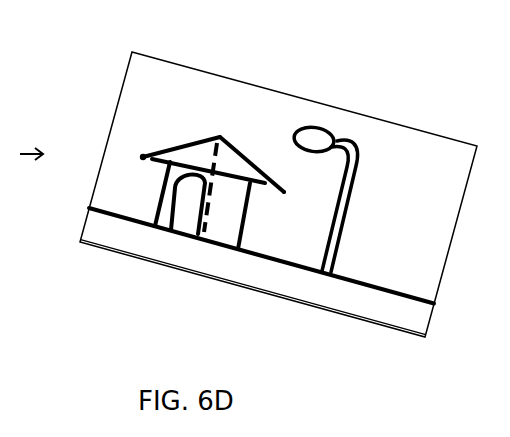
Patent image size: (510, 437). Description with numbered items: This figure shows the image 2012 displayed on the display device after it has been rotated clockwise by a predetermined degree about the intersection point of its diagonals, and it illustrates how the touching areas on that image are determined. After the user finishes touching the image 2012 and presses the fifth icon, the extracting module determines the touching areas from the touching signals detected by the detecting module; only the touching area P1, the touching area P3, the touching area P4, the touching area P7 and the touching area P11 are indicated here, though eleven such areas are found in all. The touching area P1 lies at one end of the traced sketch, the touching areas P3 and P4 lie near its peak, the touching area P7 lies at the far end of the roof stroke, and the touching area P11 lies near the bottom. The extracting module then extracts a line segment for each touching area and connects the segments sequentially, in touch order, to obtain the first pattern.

The image 2012 is at (219, 74).
The touching area P1 is at (141, 155).
The touching area P3 is at (187, 133).
The touching area P4 is at (221, 135).
The touching area P7 is at (281, 180).
The touching area P11 is at (205, 228).